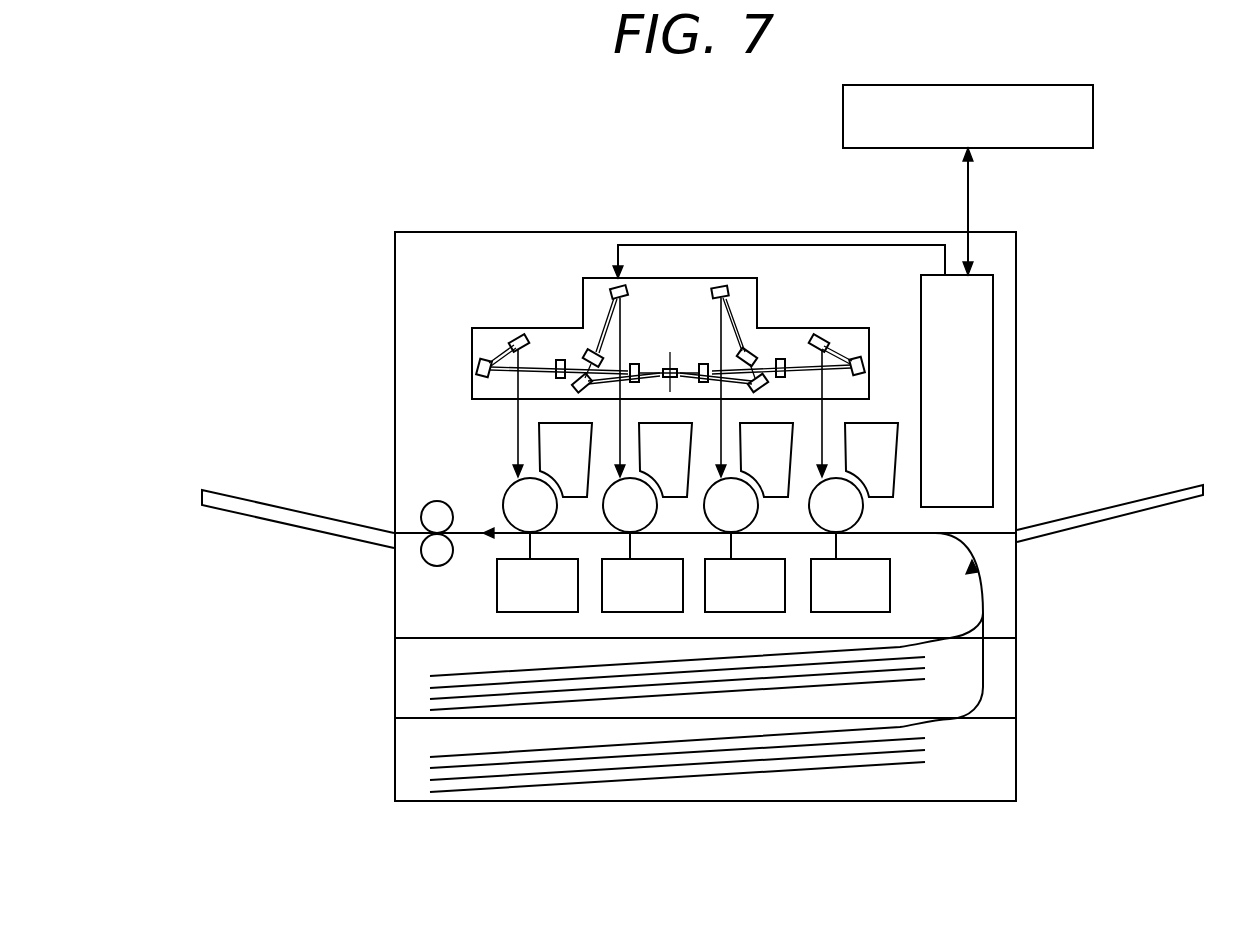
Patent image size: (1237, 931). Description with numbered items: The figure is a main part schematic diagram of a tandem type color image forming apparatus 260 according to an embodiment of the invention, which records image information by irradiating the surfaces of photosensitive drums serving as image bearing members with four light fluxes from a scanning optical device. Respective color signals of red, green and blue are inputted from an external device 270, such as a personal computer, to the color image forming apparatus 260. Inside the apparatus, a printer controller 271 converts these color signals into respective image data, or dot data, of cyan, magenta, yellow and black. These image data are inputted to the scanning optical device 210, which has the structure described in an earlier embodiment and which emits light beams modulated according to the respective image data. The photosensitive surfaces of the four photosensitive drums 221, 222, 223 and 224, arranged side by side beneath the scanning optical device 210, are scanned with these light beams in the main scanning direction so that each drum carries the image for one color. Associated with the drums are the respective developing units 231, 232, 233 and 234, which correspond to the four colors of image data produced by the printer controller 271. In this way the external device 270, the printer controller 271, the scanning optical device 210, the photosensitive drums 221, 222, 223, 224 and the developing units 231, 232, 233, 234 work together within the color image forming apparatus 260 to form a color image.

The scanning optical device 210 is at (562, 335).
The photosensitive drum 221 is at (537, 585).
The photosensitive drum 222 is at (642, 585).
The photosensitive drum 223 is at (745, 585).
The photosensitive drum 224 is at (850, 585).
The developing unit 231 is at (565, 460).
The developing unit 232 is at (665, 460).
The developing unit 233 is at (766, 460).
The developing unit 234 is at (871, 460).
The color image forming apparatus 260 is at (460, 243).
The external device 270 is at (1094, 108).
The printer controller 271 is at (988, 379).